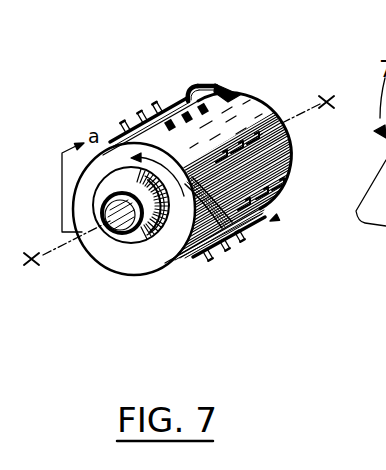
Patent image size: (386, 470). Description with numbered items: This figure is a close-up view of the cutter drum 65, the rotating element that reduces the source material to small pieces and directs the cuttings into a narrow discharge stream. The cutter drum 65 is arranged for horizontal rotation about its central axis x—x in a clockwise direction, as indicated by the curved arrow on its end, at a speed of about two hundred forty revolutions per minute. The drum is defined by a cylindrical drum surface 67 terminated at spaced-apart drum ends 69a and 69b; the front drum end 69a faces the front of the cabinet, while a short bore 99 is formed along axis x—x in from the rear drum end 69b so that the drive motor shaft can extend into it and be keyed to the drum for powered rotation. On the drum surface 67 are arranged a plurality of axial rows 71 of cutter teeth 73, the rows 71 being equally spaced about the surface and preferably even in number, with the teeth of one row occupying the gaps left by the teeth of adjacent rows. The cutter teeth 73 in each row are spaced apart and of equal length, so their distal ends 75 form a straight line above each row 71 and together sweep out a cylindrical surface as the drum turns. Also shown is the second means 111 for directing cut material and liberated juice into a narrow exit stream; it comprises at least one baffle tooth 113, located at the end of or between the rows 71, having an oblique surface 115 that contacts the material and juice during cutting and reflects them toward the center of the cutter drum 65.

The cutter drum 65 is at (250, 120).
The cylindrical drum surface 67 is at (265, 158).
The front drum end 69a is at (232, 96).
The rear drum end 69b is at (157, 257).
The axial rows of cutter teeth 71 is at (168, 100).
The cutter teeth 73 is at (124, 125).
The distal ends of cutter teeth 75 is at (152, 104).
The short bore 99 is at (118, 226).
The second means 111 is at (278, 217).
The baffle tooth 113 is at (217, 87).
The oblique surface 115 is at (172, 100).